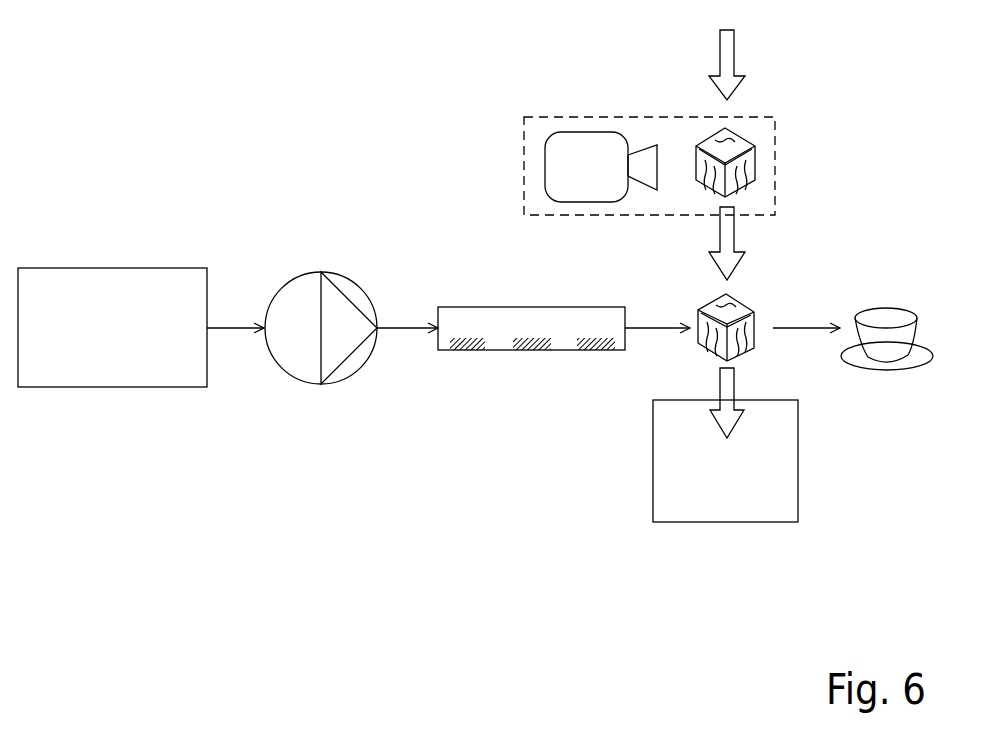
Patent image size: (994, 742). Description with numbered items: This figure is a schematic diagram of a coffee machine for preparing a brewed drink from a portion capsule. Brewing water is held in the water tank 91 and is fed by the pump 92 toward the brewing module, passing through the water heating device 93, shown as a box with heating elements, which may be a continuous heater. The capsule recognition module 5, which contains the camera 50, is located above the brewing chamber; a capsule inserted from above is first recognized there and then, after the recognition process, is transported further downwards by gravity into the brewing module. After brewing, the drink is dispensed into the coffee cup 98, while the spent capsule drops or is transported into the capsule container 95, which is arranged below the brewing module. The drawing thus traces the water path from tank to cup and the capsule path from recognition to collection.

The capsule recognition module 5 is at (524, 162).
The camera 50 is at (588, 157).
The water tank 91 is at (158, 350).
The pump 92 is at (307, 352).
The heater 93 is at (498, 328).
The capsule container 95 is at (725, 487).
The coffee cup 98 is at (888, 342).